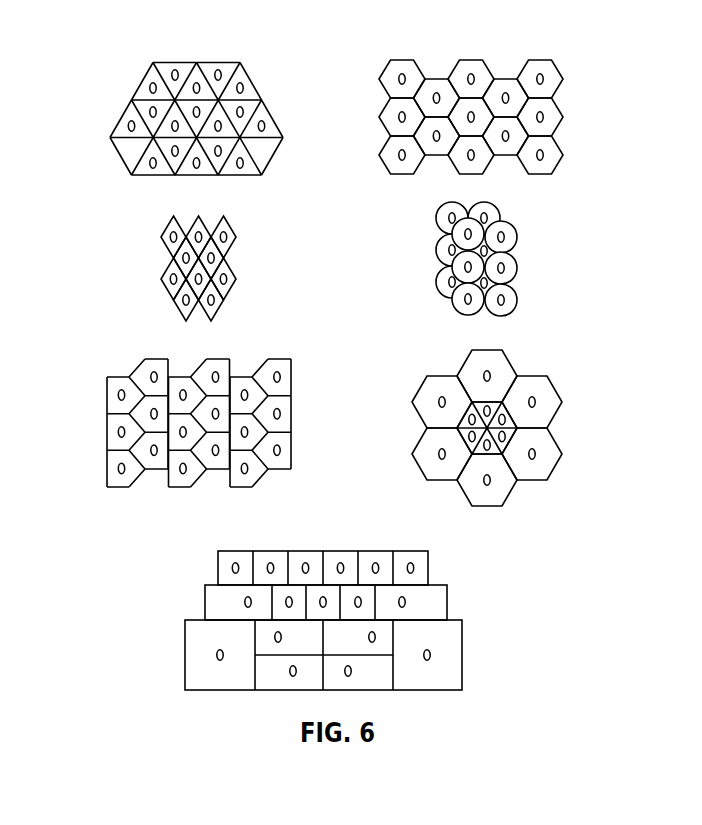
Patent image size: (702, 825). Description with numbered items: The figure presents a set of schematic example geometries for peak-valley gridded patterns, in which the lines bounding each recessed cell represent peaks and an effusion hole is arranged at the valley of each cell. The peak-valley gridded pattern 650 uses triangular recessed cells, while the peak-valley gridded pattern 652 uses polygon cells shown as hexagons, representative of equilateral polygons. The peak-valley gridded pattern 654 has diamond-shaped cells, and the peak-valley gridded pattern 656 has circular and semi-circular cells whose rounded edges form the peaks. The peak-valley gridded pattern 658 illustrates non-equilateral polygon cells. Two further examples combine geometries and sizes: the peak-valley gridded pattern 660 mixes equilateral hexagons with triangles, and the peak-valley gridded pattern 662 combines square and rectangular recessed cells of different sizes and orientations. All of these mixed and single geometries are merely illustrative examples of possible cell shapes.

The peak-valley gridded pattern 650 is at (143, 61).
The peak-valley gridded pattern 652 is at (438, 62).
The peak-valley gridded pattern 654 is at (162, 224).
The peak-valley gridded pattern 656 is at (433, 221).
The peak-valley gridded pattern 658 is at (126, 370).
The peak-valley gridded pattern 660 is at (448, 373).
The peak-valley gridded pattern 662 is at (211, 561).